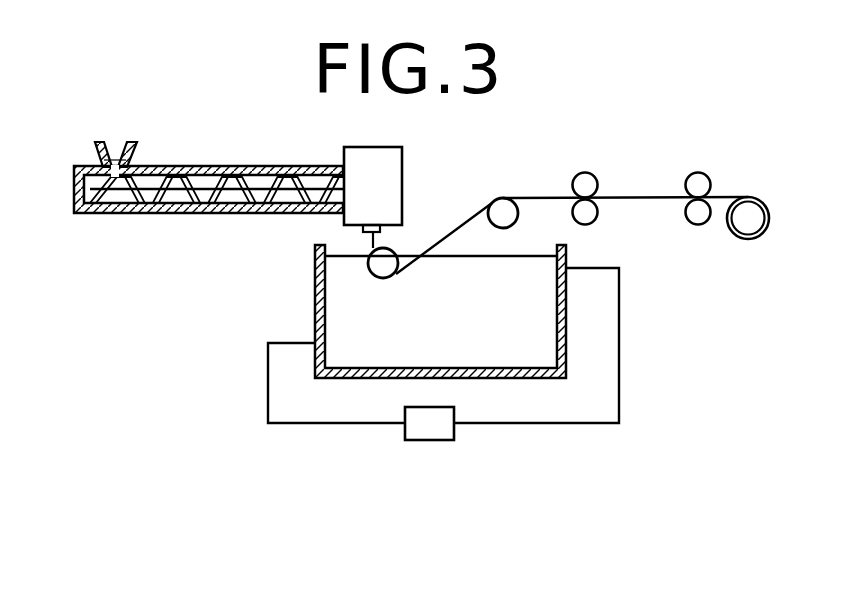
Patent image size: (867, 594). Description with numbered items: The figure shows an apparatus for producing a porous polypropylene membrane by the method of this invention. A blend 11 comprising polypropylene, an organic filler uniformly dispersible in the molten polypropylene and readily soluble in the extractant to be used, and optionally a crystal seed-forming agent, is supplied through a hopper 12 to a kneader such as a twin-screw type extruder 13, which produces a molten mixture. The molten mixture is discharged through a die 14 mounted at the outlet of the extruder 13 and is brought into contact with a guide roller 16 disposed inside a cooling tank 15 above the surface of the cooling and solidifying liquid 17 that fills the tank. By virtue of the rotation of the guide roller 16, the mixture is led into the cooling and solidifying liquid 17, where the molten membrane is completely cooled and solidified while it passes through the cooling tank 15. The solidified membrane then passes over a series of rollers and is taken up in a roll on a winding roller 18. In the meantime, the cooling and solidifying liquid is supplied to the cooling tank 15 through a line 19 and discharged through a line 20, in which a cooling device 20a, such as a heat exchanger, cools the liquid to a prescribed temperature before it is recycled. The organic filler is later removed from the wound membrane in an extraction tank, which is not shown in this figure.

The blend 11 is at (115, 156).
The hopper 12 is at (95, 146).
The twin-screw type extruder 13 is at (193, 214).
The die 14 is at (390, 178).
The cooling tank 15 is at (315, 297).
The guide roller 16 is at (395, 250).
The cooling and solidifying liquid 17 is at (537, 320).
The winding roller 18 is at (752, 222).
The line 19 is at (619, 368).
The line 20 is at (268, 392).
The cooling device 20a is at (432, 433).